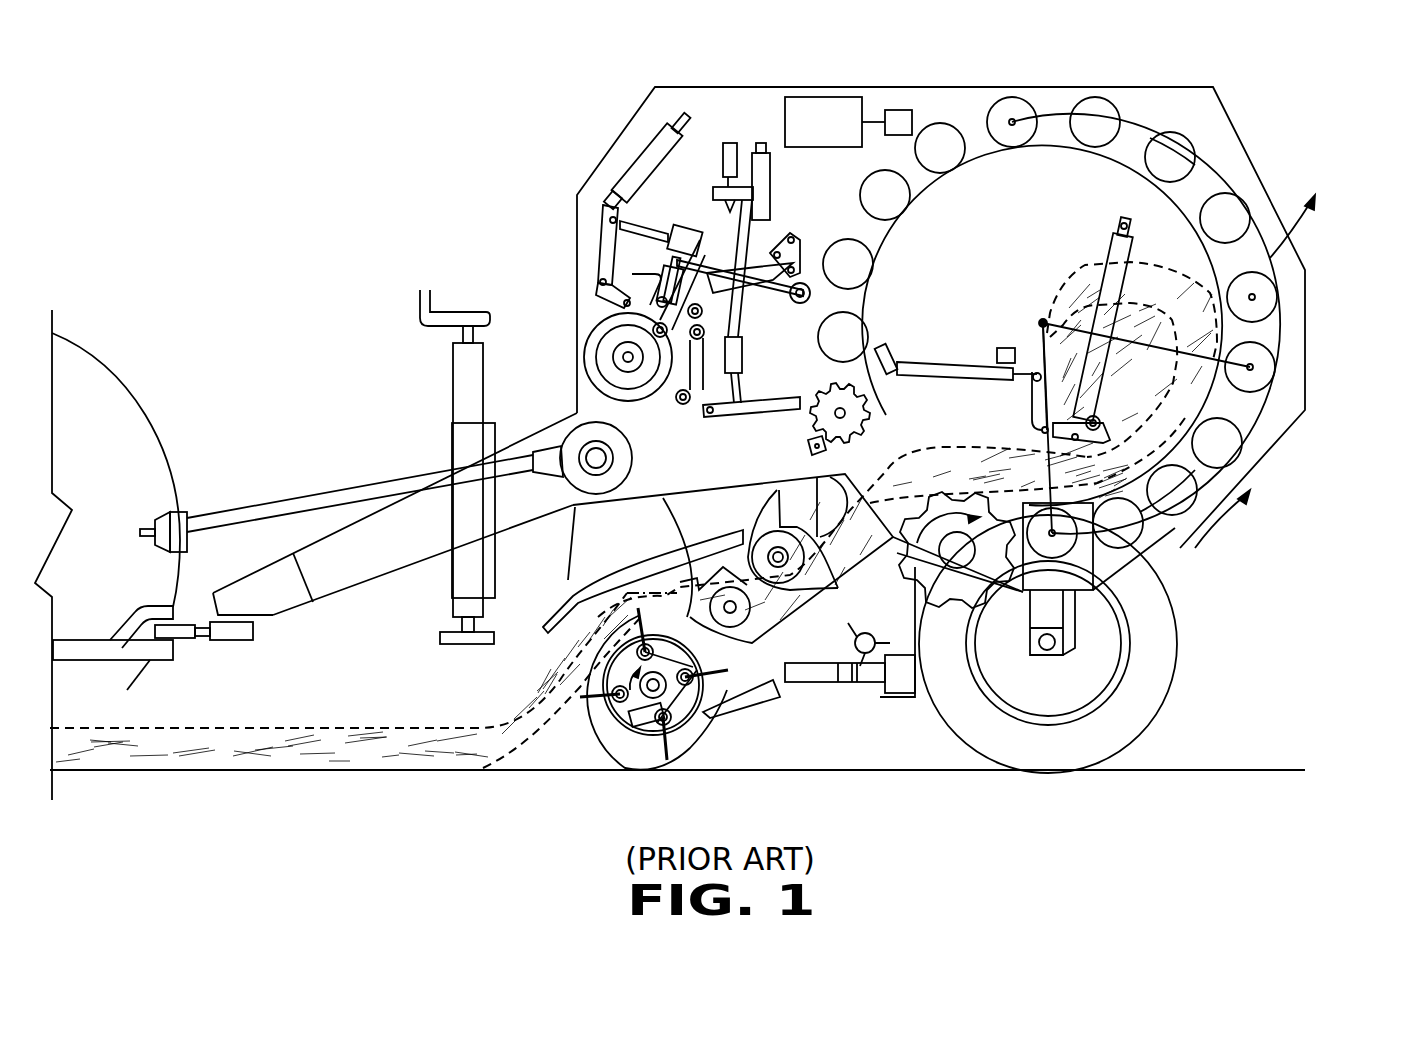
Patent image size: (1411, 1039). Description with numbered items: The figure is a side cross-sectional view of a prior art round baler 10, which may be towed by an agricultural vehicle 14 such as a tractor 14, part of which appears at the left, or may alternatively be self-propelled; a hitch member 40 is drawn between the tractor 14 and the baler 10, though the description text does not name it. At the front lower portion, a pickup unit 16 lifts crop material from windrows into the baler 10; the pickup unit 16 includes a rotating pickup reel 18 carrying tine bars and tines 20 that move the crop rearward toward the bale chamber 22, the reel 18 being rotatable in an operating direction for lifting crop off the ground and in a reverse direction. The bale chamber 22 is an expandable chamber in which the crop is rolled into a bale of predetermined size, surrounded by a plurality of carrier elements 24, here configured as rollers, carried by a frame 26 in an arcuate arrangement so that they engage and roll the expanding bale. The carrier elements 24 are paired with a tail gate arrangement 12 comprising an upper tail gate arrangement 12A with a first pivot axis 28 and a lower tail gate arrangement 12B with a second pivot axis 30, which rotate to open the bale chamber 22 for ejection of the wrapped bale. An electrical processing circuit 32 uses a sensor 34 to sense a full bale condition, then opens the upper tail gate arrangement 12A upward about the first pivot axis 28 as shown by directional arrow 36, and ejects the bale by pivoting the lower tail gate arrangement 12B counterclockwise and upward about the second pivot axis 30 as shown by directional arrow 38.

The round baler 10 is at (566, 98).
The tail gate arrangement 12 is at (1290, 347).
The upper tail gate arrangement 12A is at (1207, 132).
The lower tail gate arrangement 12B is at (1166, 550).
The agricultural vehicle 14 is at (122, 378).
The pickup unit 16 is at (626, 752).
The pickup reel 18 is at (692, 735).
The tines 20 is at (580, 693).
The bale chamber 22 is at (963, 256).
The carrier elements 24 is at (1105, 95).
The frame 26 is at (700, 87).
The first pivot axis 28 is at (1014, 120).
The second pivot axis 30 is at (1043, 323).
The electrical processing circuit 32 is at (825, 97).
The sensor 34 is at (901, 110).
The directional arrow 36 is at (1302, 250).
The directional arrow 38 is at (1213, 522).
The tongue 40 is at (290, 495).